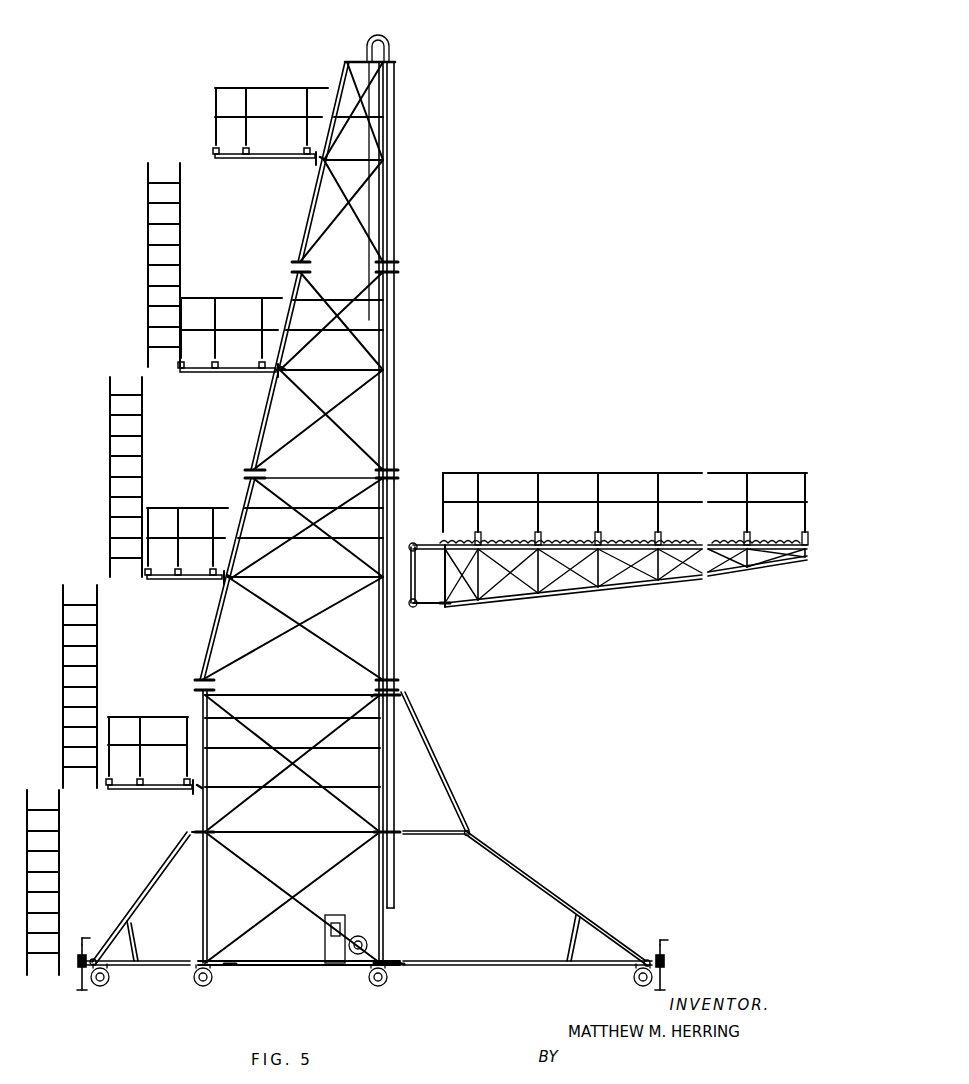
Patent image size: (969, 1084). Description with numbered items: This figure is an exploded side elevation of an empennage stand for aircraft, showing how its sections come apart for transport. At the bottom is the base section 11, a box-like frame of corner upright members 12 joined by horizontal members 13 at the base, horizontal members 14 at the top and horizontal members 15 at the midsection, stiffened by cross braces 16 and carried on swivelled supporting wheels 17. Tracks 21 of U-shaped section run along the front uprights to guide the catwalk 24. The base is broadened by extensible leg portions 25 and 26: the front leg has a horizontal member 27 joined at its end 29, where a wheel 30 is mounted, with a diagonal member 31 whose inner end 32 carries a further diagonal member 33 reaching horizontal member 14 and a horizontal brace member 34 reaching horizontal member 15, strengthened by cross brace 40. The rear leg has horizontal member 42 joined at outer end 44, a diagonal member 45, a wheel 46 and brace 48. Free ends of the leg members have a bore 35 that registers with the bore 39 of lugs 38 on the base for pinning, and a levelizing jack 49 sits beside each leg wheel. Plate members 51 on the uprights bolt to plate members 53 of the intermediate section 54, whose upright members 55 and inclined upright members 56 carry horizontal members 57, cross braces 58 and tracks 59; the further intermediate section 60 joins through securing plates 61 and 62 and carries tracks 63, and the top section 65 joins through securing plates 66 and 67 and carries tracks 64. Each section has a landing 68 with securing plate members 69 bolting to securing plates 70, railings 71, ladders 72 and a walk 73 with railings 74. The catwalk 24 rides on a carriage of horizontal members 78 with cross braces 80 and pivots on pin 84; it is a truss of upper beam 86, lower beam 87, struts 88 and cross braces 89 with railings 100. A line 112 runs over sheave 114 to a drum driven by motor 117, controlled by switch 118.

The base section 11 is at (412, 790).
The upright members 12 is at (208, 887).
The horizontal members 13 is at (292, 966).
The horizontal members 14 is at (271, 694).
The horizontal members 15 is at (277, 831).
The cross braces 16 is at (282, 777).
The supporting wheel 17 is at (200, 986).
The tracks 21 is at (396, 885).
The catwalk 24 is at (604, 576).
The extensible leg portions 25 is at (370, 921).
The extensible leg portions 26 is at (136, 921).
The horizontal members 27 is at (490, 966).
The joined end 29 is at (648, 958).
The wheel 30 is at (638, 985).
The diagonal member 31 is at (503, 855).
The inner end 32 is at (471, 829).
The diagonal member 33 is at (448, 780).
The horizontal brace member 34 is at (430, 836).
The bore 35 is at (402, 693).
The lugs 38 is at (376, 697).
The bore 39 is at (393, 700).
The cross brace 40 is at (574, 932).
The horizontal members 42 is at (155, 966).
The outer end 44 is at (94, 958).
The diagonal member 45 is at (148, 895).
The wheel 46 is at (106, 986).
The brace 48 is at (137, 937).
The levelizing jack 49 is at (665, 955).
The horizontal plate member 51 is at (200, 691).
The plate member 53 is at (205, 679).
The intermediate section 54 is at (182, 635).
The upright members 55 is at (372, 404).
The upright members 56 is at (262, 430).
The horizontal members 57 is at (314, 478).
The cross braces 58 is at (343, 560).
The tracks 59 is at (383, 512).
The intermediate section 60 is at (433, 353).
The securing plates 61 is at (250, 469).
The securing plates 62 is at (250, 479).
The tracks 63 is at (396, 400).
The tracks 64 is at (396, 205).
The top section 65 is at (433, 103).
The securing plates 66 is at (297, 261).
The securing plates 67 is at (296, 273).
The landing 68 is at (252, 160).
The securing plate members 69 is at (312, 162).
The securing plates 70 is at (322, 163).
The railings 71 is at (256, 88).
The ladders 72 is at (147, 282).
The walk 73 is at (354, 162).
The railings 74 is at (358, 120).
The horizontal members 78 is at (425, 543).
The cross braces 80 is at (413, 608).
The pivot pin 84 is at (447, 545).
The upper beam 86 is at (616, 544).
The lower beam 87 is at (686, 580).
The struts 88 is at (528, 590).
The cross braces 89 is at (492, 558).
The railings 100 is at (620, 452).
The line 112 is at (366, 246).
The sheave 114 is at (370, 38).
The motor 117 is at (349, 946).
The switch 118 is at (332, 914).